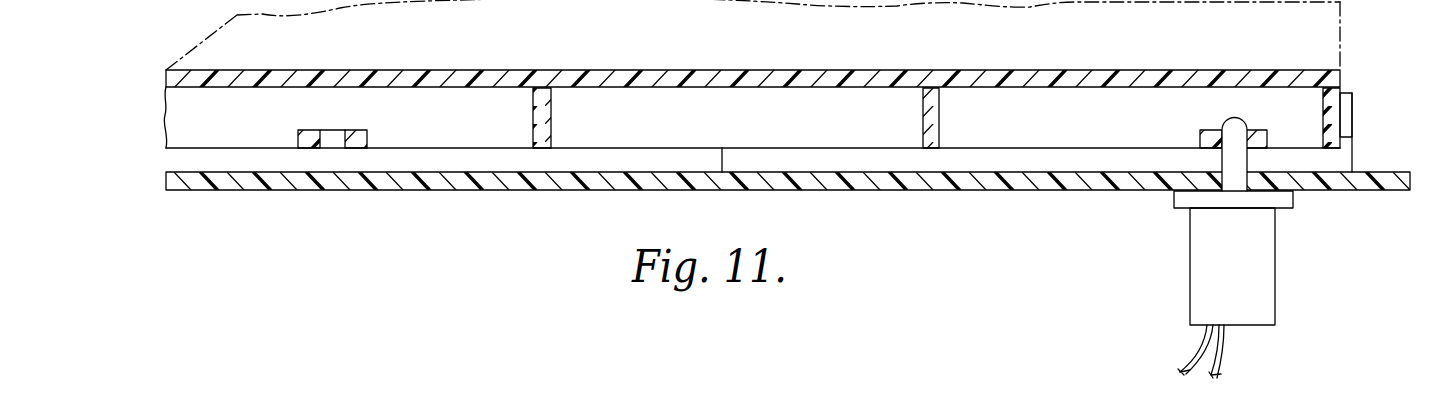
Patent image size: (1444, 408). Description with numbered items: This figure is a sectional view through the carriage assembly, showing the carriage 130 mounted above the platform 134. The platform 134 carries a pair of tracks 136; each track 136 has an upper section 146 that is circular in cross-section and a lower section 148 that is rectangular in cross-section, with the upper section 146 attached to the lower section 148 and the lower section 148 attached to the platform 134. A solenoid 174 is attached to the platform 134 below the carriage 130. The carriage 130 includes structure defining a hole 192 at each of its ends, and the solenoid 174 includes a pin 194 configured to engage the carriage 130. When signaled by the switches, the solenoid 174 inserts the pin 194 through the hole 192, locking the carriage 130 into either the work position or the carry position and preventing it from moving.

The carriage 130 is at (546, 85).
The platform 134 is at (340, 172).
The track 136 is at (1353, 122).
The upper section 146 is at (1346, 100).
The lower section 148 is at (1338, 160).
The solenoid 174 is at (1208, 257).
The hole 192 is at (326, 137).
The pin 194 is at (1239, 133).